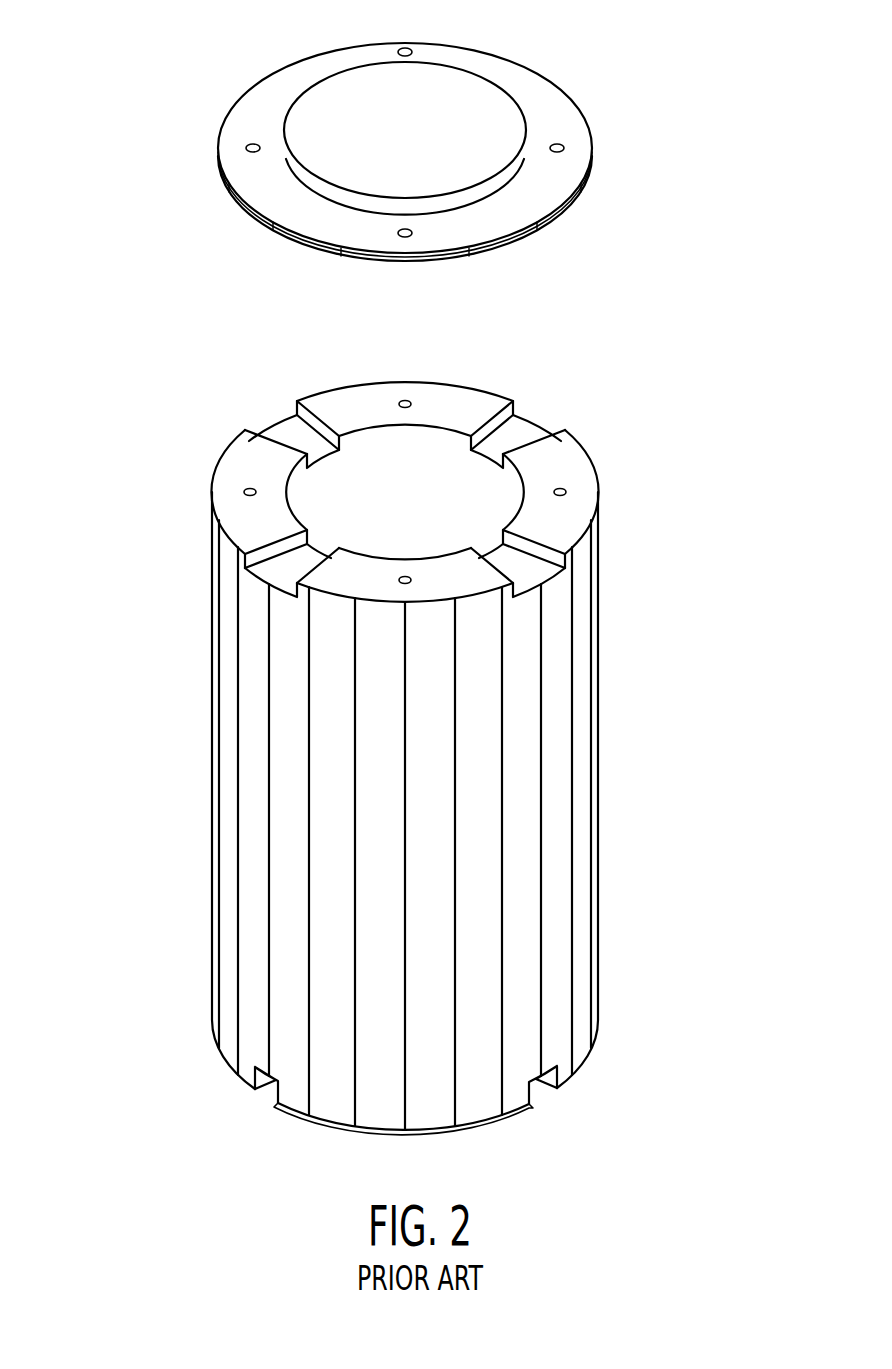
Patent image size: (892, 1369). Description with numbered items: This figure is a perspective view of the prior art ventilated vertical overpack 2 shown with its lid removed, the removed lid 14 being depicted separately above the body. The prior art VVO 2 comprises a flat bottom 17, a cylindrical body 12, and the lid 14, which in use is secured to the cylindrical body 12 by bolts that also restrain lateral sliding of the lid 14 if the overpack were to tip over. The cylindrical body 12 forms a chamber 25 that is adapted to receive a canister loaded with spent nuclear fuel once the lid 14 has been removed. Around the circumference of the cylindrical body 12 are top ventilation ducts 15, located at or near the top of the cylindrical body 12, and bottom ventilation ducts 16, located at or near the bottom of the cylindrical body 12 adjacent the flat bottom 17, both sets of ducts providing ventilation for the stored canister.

The ventilated vertical overpack 2 is at (757, 396).
The cylindrical body 12 is at (578, 832).
The lid 14 is at (565, 117).
The top ventilation ducts 15 is at (288, 432).
The bottom ventilation ducts 16 is at (545, 1090).
The flat bottom 17 is at (488, 1124).
The chamber 25 is at (417, 478).